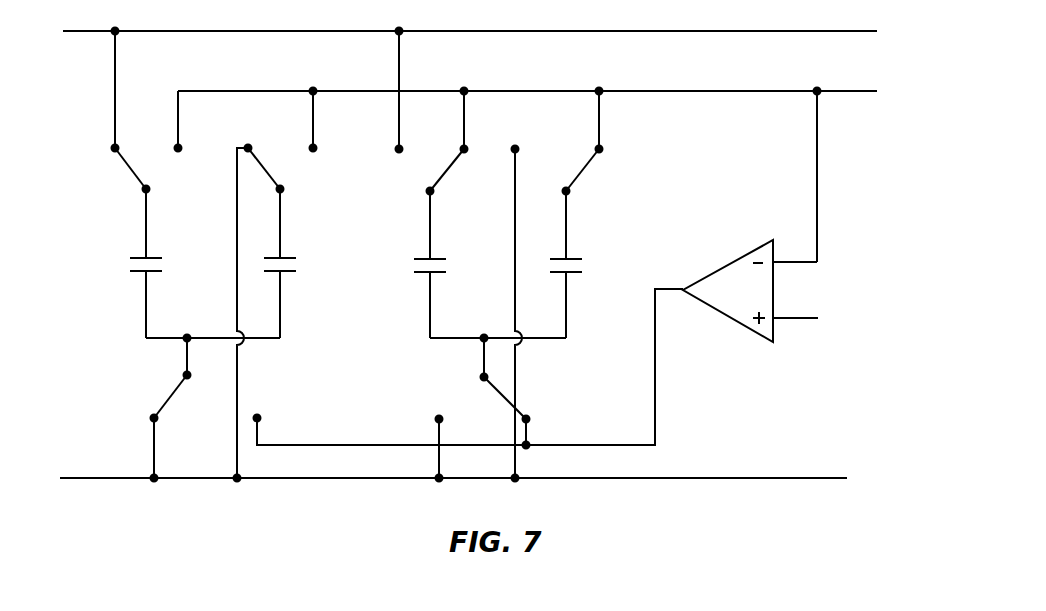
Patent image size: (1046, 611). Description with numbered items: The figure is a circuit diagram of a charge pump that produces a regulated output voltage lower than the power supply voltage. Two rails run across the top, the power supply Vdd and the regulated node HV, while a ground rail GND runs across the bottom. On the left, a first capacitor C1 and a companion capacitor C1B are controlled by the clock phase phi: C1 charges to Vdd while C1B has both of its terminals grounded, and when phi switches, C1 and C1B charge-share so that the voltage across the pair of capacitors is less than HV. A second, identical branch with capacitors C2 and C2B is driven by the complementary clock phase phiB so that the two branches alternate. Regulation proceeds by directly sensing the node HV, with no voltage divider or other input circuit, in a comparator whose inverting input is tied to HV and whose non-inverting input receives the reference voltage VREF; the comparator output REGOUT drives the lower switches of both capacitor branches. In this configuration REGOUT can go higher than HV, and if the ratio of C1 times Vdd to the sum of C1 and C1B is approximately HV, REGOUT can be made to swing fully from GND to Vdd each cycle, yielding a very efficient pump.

The power supply voltage Vdd is at (495, 33).
The regulated voltage output node HV is at (546, 170).
The ground GND is at (482, 481).
The clock phase phi is at (118, 168).
The complementary clock phase phiB is at (441, 173).
The first capacitor C1 is at (188, 265).
The first charge-sharing capacitor C1B is at (288, 312).
The second capacitor C2 is at (473, 266).
The second charge-sharing capacitor C2B is at (569, 284).
The regulator output REGOUT is at (672, 282).
The reference voltage VREF is at (820, 320).